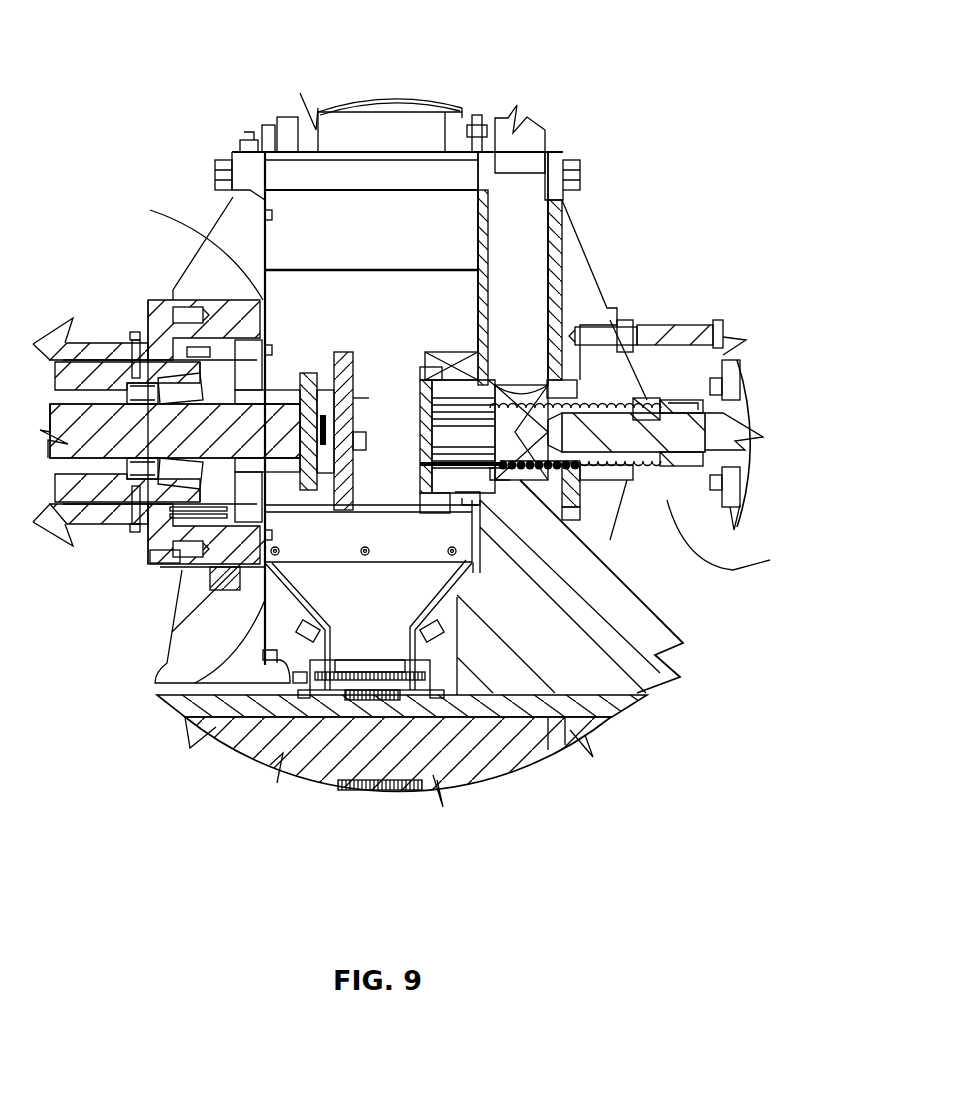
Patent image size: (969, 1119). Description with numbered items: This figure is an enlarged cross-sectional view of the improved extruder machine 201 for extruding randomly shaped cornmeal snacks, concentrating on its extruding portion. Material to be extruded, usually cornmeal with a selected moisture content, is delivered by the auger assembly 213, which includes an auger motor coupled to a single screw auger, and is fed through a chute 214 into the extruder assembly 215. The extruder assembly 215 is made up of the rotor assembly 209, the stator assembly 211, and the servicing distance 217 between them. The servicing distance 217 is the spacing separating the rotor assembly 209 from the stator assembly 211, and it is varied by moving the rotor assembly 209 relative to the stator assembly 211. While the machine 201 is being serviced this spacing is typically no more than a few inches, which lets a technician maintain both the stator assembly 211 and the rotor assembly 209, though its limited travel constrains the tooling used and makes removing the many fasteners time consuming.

The improved extruder machine 201 is at (358, 84).
The rotor assembly 209 is at (281, 323).
The stator assembly 211 is at (448, 321).
The auger assembly 213 is at (668, 496).
The chute 214 is at (522, 291).
The extruder assembly 215 is at (165, 680).
The servicing distance 217 is at (262, 572).